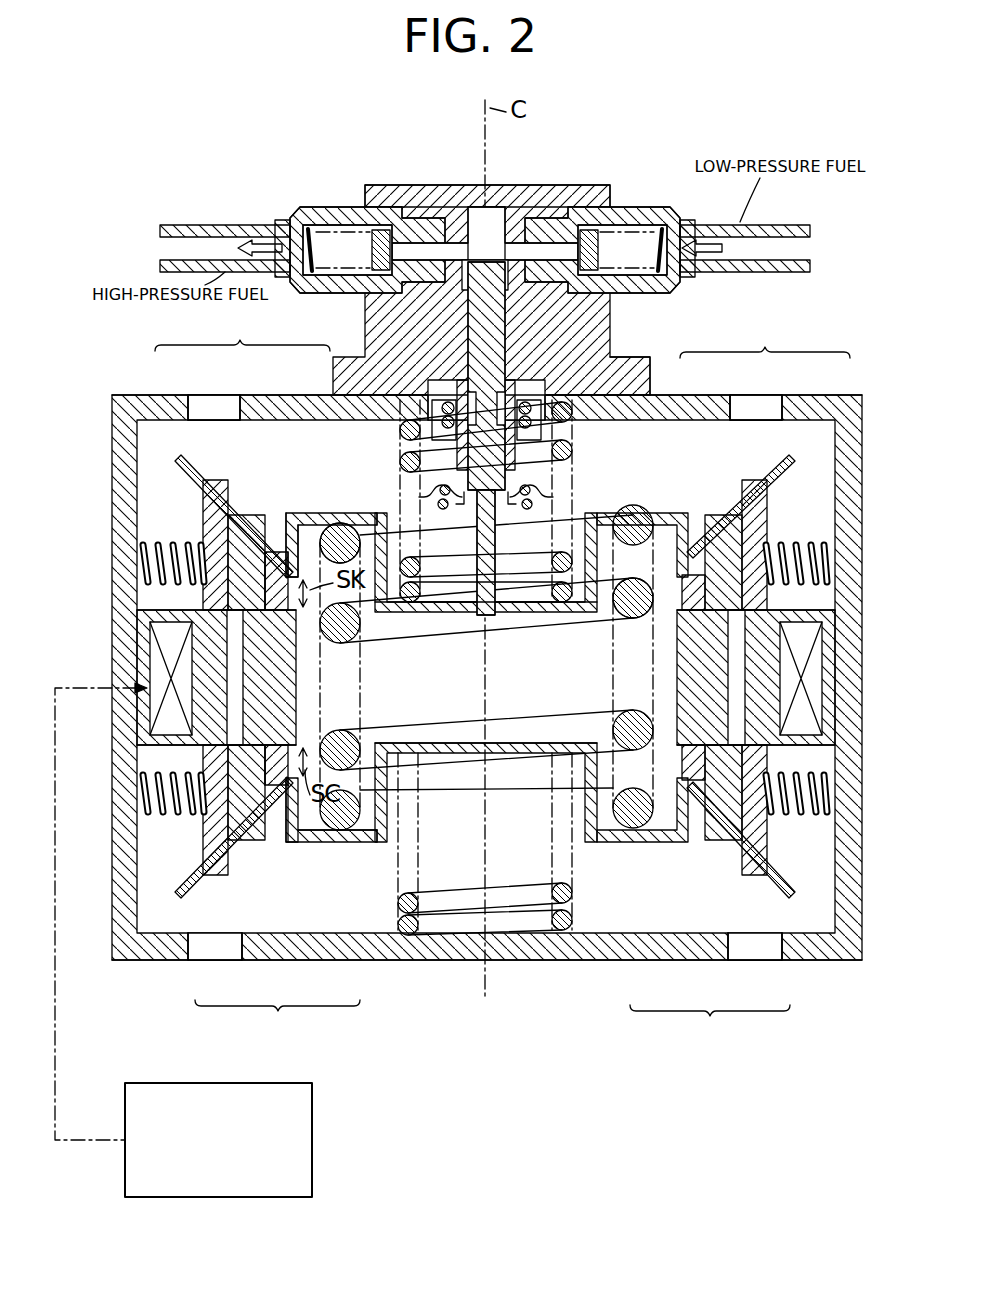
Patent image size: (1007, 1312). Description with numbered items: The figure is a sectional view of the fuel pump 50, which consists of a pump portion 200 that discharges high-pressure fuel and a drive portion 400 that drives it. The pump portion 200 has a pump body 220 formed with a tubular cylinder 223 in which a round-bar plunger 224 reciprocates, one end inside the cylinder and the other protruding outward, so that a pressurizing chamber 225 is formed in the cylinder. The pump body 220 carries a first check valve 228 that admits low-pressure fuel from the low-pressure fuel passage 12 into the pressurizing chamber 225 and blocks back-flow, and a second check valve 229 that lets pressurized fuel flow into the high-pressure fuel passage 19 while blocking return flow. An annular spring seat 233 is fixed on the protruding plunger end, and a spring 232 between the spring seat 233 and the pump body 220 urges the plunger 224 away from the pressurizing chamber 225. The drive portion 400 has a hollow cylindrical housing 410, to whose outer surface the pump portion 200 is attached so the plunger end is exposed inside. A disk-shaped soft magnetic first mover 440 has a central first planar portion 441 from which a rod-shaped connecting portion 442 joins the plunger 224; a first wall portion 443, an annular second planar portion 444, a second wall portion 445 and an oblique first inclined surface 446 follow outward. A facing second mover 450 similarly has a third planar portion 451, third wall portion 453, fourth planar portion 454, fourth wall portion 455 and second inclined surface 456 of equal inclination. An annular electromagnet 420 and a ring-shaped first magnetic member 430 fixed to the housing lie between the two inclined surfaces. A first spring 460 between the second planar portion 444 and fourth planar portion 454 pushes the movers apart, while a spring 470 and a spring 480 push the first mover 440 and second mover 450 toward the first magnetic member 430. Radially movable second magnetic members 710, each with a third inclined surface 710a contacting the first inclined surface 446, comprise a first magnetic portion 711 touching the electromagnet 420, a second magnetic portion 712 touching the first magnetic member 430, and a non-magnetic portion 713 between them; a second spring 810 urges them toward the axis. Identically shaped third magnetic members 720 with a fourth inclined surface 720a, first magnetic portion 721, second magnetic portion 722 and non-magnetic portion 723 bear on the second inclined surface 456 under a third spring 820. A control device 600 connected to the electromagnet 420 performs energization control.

The fuel pump 50 is at (170, 148).
The pump portion 200 is at (410, 185).
The high-pressure fuel passage 19 is at (228, 225).
The low-pressure fuel passage 12 is at (705, 225).
The pressurizing chamber 225 is at (505, 258).
The second check valve 229 is at (330, 293).
The first check valve 228 is at (678, 294).
The cylinder 223 is at (468, 350).
The plunger 224 is at (505, 350).
The pump body 220 is at (610, 340).
The housing 410 is at (650, 395).
The second magnetic member 710 is at (502, 335).
The first magnetic portion 711 is at (188, 395).
The non-magnetic portion 713 is at (225, 478).
The second magnetic portion 712 is at (278, 552).
The drive portion 400 is at (125, 395).
The first inclined surface 446 is at (178, 462).
The third inclined surface 710a is at (270, 555).
The second planar portion 444 is at (340, 523).
The second wall portion 445 is at (298, 538).
The first wall portion 443 is at (378, 538).
The second spring 810 is at (166, 542).
The spring 470 is at (572, 452).
The spring 232 is at (535, 503).
The first mover 440 is at (642, 513).
The spring seat 233 is at (455, 510).
The connecting portion 442 is at (498, 505).
The first spring 460 is at (640, 580).
The first magnetic member 430 is at (348, 660).
The first planar portion 441 is at (460, 615).
The electromagnet 420 is at (112, 665).
The third planar portion 451 is at (518, 743).
The fourth wall portion 455 is at (300, 835).
The third wall portion 453 is at (380, 835).
The fourth planar portion 454 is at (340, 843).
The fourth inclined surface 720a is at (258, 855).
The third spring 820 is at (166, 814).
The second mover 450 is at (638, 842).
The spring 480 is at (575, 900).
The second inclined surface 456 is at (178, 893).
The first magnetic portion 721 is at (216, 933).
The non-magnetic portion 723 is at (245, 860).
The second magnetic portion 722 is at (280, 785).
The third magnetic member 720 is at (492, 1020).
The control device 600 is at (312, 1140).